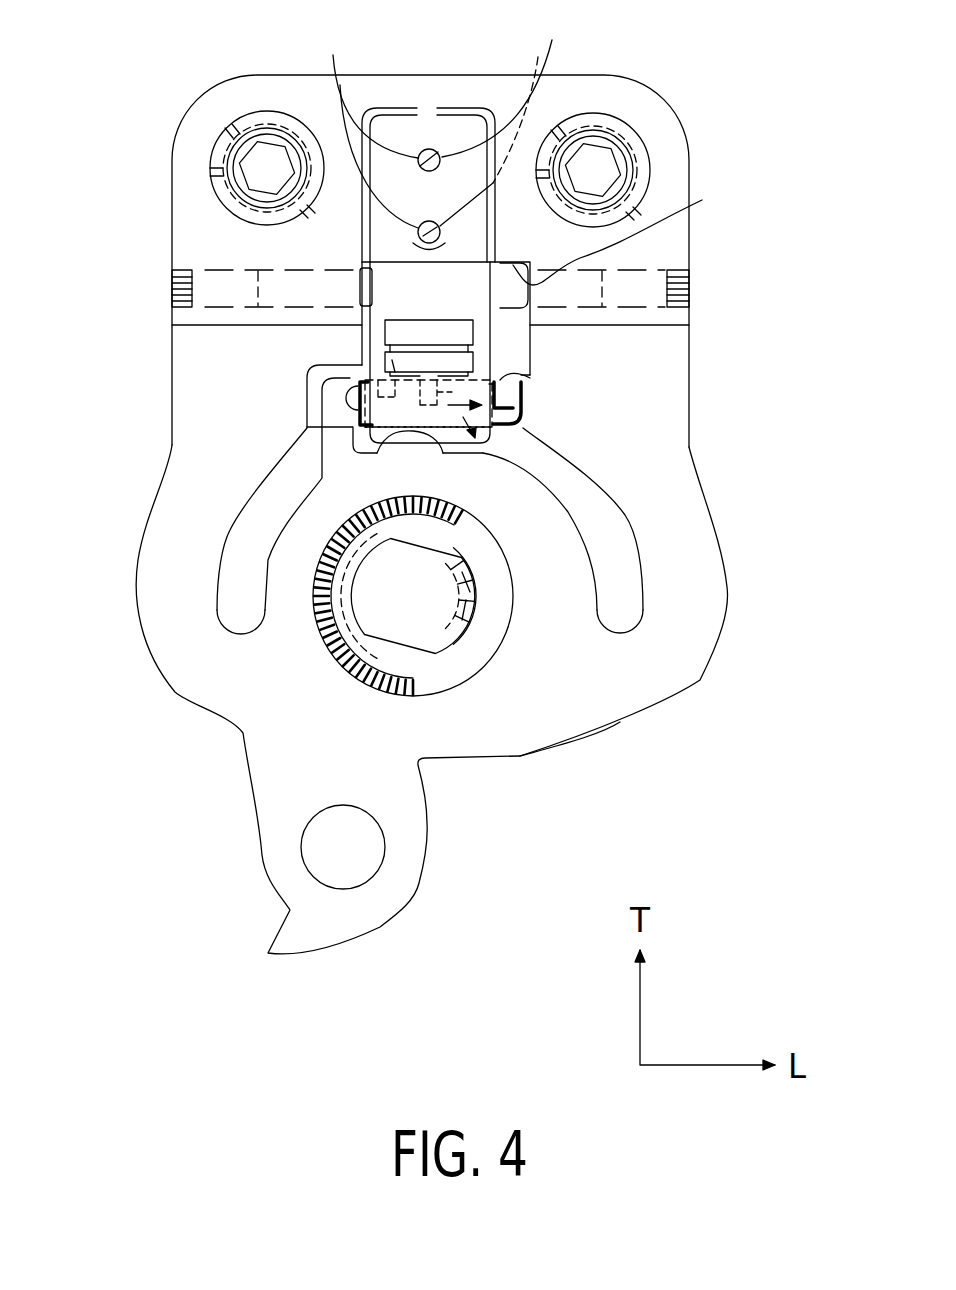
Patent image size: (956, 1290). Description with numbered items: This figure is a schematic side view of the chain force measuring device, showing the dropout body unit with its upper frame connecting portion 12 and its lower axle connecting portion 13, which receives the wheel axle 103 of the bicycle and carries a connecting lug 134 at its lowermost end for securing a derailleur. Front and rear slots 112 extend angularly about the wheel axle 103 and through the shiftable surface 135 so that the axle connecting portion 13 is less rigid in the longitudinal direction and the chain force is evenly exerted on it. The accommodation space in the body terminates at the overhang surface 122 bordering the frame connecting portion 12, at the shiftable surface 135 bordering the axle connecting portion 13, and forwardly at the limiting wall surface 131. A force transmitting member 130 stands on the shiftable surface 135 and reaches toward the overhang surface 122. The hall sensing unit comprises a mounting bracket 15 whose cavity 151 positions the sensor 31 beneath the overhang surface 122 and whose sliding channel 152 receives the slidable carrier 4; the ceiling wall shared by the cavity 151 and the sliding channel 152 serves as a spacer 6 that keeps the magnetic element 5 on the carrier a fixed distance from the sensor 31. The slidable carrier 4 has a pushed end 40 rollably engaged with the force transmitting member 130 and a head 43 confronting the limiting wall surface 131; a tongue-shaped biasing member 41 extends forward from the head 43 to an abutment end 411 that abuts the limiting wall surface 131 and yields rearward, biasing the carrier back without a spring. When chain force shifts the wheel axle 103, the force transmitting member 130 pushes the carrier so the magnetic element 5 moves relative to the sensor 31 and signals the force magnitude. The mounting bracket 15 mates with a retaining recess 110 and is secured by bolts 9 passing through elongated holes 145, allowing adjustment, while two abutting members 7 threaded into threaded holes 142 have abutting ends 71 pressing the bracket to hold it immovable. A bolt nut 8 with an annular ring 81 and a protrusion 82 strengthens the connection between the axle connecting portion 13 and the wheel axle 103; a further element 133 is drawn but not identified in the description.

The slidable carrier 4 is at (480, 450).
The magnetic element 5 is at (545, 410).
The spacer 6 is at (530, 338).
The abutting members 7 is at (285, 290).
The bolt nut 8 is at (476, 682).
The bolts 9 is at (339, 128).
The frame connecting portion 12 is at (706, 233).
The axle connecting portion 13 is at (580, 728).
The mounting bracket 15 is at (408, 118).
The sensor 31 is at (392, 360).
The pushed end 40 is at (357, 386).
The biasing member 41 is at (525, 420).
The head 43 is at (528, 425).
The abutting ends 71 is at (370, 272).
The annular ring 81 is at (395, 688).
The protrusion 82 is at (520, 637).
The wheel axle 103 is at (438, 612).
The retaining recess 110 is at (478, 132).
The front and rear slots 112 is at (240, 600).
The overhang surface 122 is at (626, 224).
The force transmitting member 130 is at (340, 408).
The limiting wall surface 131 is at (470, 378).
The arm 133 is at (338, 443).
The connecting lug 134 is at (367, 913).
The shiftable surface 135 is at (370, 462).
The threaded holes 142 is at (222, 270).
The elongated holes 145 is at (502, 124).
The cavity 151 is at (472, 356).
The sliding channel 152 is at (365, 427).
The abutment end 411 is at (522, 400).